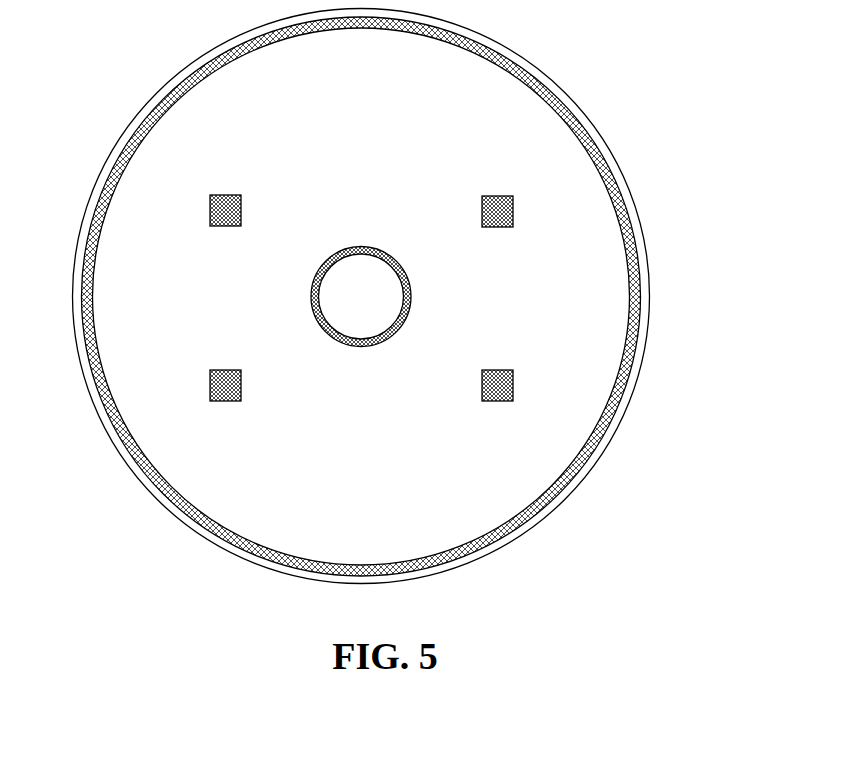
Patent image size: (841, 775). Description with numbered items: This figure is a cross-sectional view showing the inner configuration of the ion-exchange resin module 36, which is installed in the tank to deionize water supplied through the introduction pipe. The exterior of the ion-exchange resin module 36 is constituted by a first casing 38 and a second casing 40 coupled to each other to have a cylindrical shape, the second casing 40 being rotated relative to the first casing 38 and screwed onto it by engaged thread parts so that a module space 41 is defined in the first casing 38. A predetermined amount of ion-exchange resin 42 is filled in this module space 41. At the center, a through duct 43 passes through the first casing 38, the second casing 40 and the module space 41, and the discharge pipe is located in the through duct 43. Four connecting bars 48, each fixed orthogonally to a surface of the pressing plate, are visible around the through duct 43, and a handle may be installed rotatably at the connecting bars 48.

The ion-exchange resin module 36 is at (386, 296).
The first casing 38 is at (626, 181).
The second casing 40 is at (650, 280).
The module space 41 is at (566, 128).
The ion-exchange resin 42 is at (522, 108).
The through duct 43 is at (371, 306).
The connecting bar 48 is at (210, 216).